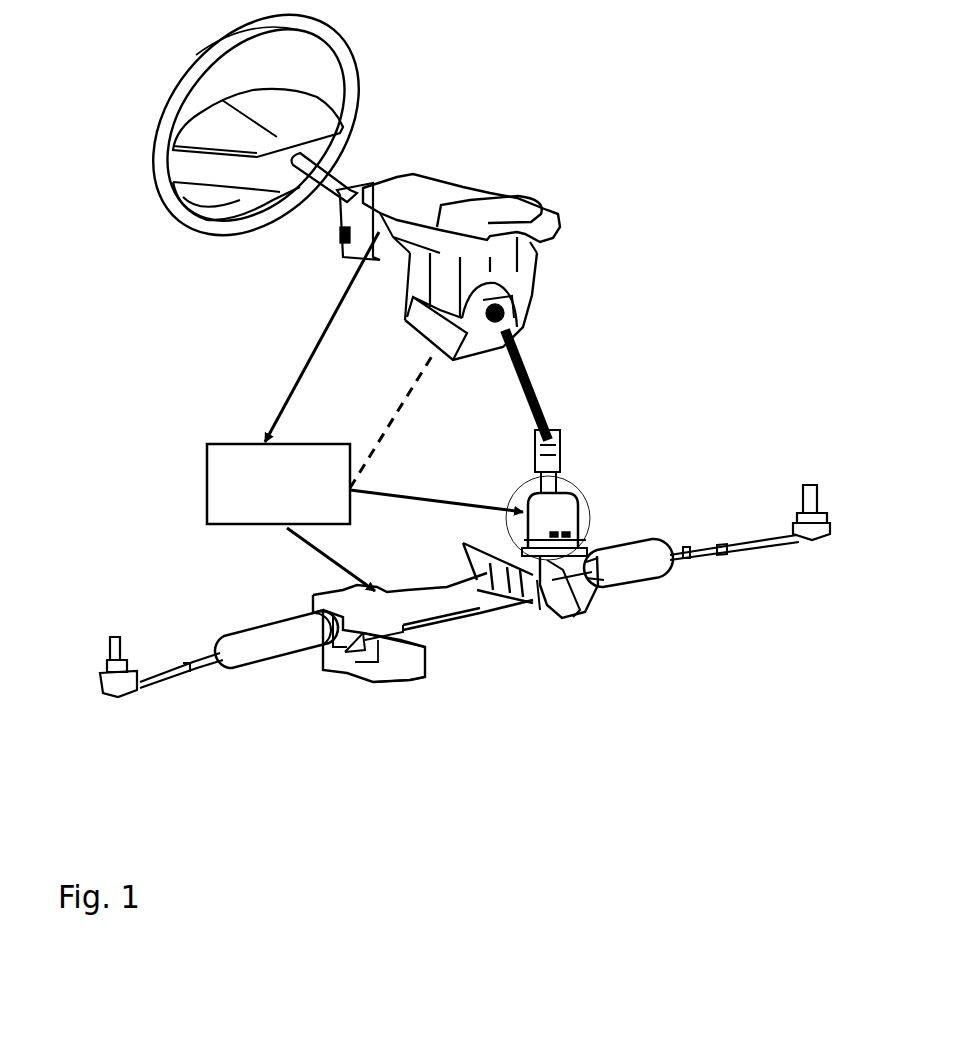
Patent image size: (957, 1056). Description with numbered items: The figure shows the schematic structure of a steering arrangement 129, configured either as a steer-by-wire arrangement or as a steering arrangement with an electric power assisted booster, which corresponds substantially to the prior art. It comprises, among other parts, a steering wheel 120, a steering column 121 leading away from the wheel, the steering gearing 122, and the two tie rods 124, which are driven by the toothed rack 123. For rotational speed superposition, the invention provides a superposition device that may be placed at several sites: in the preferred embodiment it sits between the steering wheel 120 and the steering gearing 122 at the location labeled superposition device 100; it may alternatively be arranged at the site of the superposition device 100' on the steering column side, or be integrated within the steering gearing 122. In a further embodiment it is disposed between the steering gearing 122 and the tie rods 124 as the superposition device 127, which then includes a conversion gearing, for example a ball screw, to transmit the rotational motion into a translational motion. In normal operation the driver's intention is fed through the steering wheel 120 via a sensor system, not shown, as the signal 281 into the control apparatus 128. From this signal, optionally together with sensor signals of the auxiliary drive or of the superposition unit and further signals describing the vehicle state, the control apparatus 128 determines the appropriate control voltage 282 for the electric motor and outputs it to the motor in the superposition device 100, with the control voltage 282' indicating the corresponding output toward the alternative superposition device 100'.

The steering wheel 120 is at (331, 37).
The steering column 121 is at (586, 194).
The superposition device 100' is at (586, 369).
The superposition device 100 is at (611, 504).
The steering gearing 122 is at (576, 598).
The toothed rack 123 is at (510, 610).
The superposition device 127 is at (380, 628).
The tie rods 124 is at (183, 675).
The control apparatus 128 is at (305, 497).
The signal 281 is at (286, 388).
The control voltage 282 is at (299, 518).
The control voltage 282' is at (411, 422).
The steering arrangement 129 is at (478, 875).